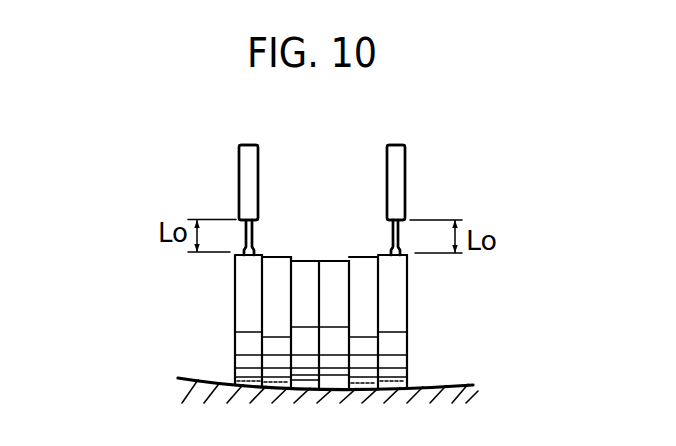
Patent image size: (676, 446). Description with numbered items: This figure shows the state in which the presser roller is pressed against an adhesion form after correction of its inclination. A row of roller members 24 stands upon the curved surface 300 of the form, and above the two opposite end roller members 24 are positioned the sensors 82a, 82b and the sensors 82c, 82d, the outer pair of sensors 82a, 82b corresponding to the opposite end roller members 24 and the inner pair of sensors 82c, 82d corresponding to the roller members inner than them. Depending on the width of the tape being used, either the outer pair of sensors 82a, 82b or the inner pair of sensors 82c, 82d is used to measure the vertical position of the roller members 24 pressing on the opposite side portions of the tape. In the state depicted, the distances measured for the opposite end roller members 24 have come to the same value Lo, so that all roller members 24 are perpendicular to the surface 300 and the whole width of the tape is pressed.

The sensor 82a is at (247, 182).
The sensor 82b is at (400, 181).
The sensor 82c is at (192, 200).
The sensor 82d is at (472, 200).
The roller member 24 is at (240, 303).
The surface 300 is at (451, 380).